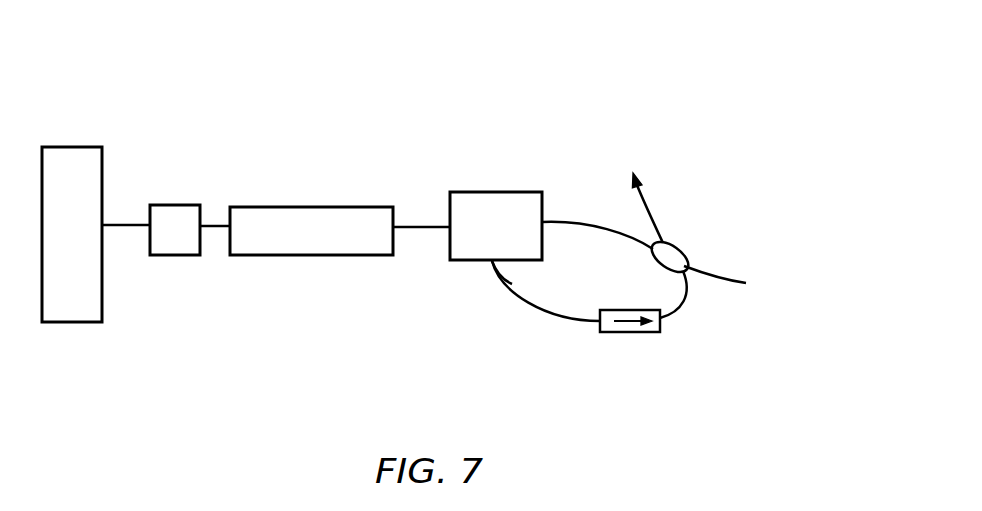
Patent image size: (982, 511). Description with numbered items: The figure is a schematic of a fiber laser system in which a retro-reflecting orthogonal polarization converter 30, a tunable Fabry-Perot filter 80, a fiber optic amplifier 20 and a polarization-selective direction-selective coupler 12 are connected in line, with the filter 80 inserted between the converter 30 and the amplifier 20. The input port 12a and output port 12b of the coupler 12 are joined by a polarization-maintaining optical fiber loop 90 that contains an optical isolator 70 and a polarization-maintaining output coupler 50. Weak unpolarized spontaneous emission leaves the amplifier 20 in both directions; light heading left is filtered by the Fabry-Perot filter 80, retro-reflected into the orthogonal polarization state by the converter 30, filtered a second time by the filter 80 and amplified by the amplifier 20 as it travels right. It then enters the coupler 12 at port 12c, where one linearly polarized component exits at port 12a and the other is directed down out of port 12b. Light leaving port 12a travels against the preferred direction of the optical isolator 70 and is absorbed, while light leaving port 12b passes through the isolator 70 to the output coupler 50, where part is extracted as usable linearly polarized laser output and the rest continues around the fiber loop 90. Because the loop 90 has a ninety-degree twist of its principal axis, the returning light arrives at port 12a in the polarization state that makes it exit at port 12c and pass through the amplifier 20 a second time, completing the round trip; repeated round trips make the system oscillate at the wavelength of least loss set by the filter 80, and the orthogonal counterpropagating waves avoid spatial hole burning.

The retro-reflecting orthogonal polarization converter 30 is at (84, 240).
The tunable Fabry-Perot filter 80 is at (213, 163).
The fiber optic amplifier 20 is at (328, 247).
The polarization-selective direction-selective coupler 12 is at (555, 158).
The input port 12a is at (545, 219).
The output port 12b is at (496, 262).
The port 12c is at (450, 226).
The polarization-maintaining output coupler 50 is at (685, 257).
The optical isolator 70 is at (654, 332).
The polarization-maintaining optical fiber loop 90 is at (530, 305).